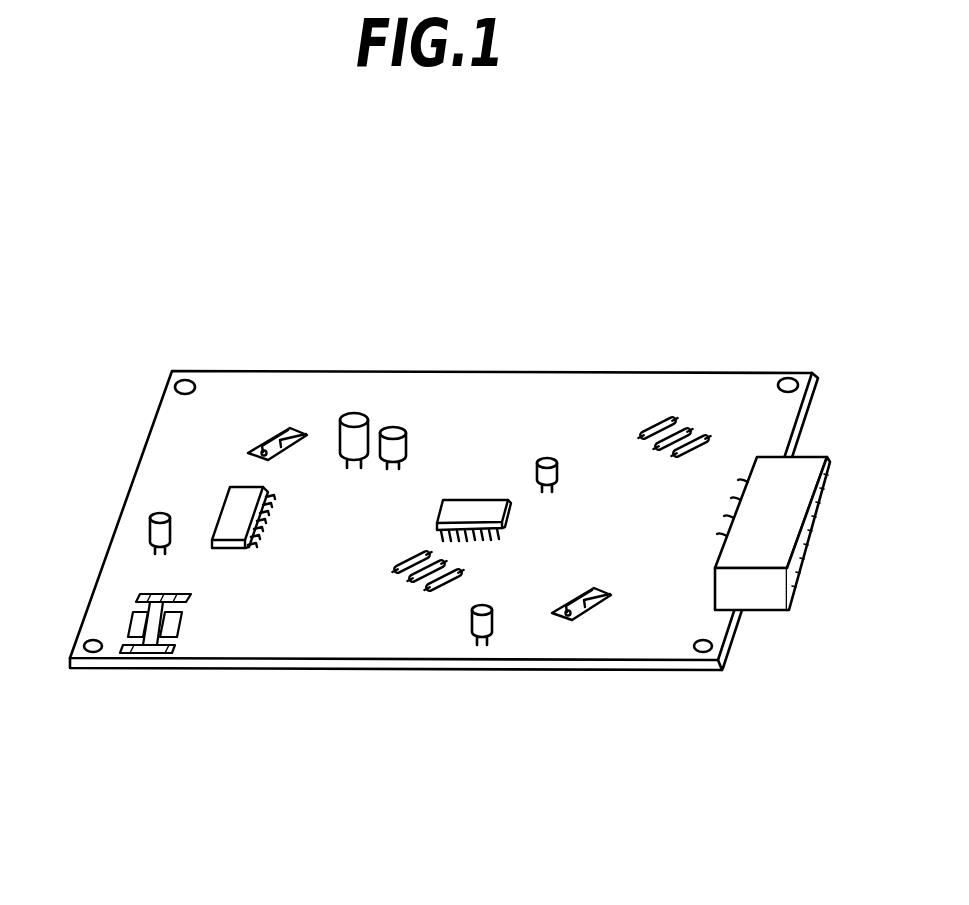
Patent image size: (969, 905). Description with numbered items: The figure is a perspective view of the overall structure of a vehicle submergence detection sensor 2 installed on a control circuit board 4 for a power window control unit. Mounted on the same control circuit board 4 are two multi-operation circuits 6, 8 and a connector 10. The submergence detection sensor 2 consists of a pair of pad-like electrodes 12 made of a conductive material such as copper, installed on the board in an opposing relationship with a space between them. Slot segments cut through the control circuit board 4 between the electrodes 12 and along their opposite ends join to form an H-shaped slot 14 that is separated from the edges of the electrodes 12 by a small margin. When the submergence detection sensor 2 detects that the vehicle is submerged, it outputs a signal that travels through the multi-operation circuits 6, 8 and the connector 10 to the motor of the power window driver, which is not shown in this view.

The submergence detection sensor 2 is at (146, 643).
The control circuit board 4 is at (560, 385).
The multi-operation circuit 6 is at (237, 500).
The multi-operation circuit 8 is at (460, 512).
The connector 10 is at (830, 470).
The pad-like electrodes 12 is at (183, 620).
The H-shaped slot 14 is at (188, 628).